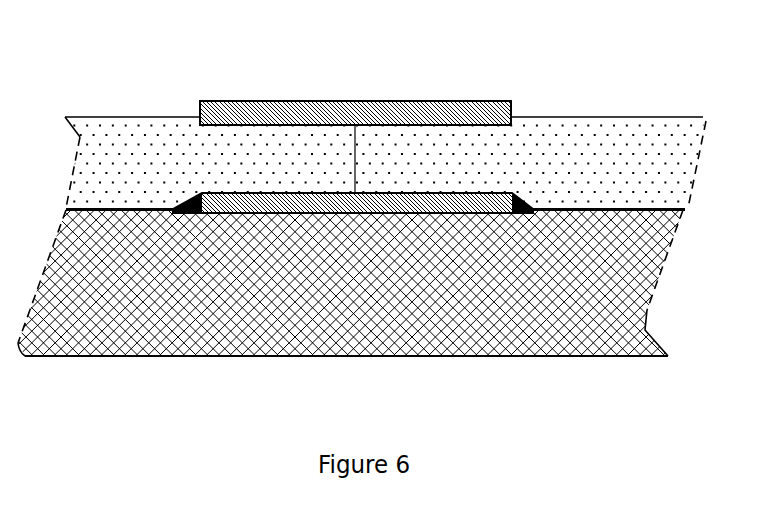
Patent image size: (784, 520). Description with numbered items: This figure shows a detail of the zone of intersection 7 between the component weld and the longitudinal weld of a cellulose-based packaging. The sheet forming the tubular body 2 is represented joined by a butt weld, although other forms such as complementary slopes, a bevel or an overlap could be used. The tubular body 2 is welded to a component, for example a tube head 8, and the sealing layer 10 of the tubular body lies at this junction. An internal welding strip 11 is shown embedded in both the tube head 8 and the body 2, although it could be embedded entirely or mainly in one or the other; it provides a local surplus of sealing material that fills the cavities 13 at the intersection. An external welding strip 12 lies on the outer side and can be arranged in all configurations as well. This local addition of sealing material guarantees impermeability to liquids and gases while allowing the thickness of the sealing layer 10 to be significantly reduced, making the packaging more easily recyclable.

The zone of intersection of the longitudinal weld and of the component weld 7 is at (162, 78).
The tubular body 2 is at (605, 140).
The component, for example a tube head 8 is at (387, 325).
The sealing layer of the tubular body 10 is at (627, 207).
The internal welding strip 11 is at (503, 193).
The external welding strip 12 is at (405, 101).
The cavities 13 is at (193, 217).